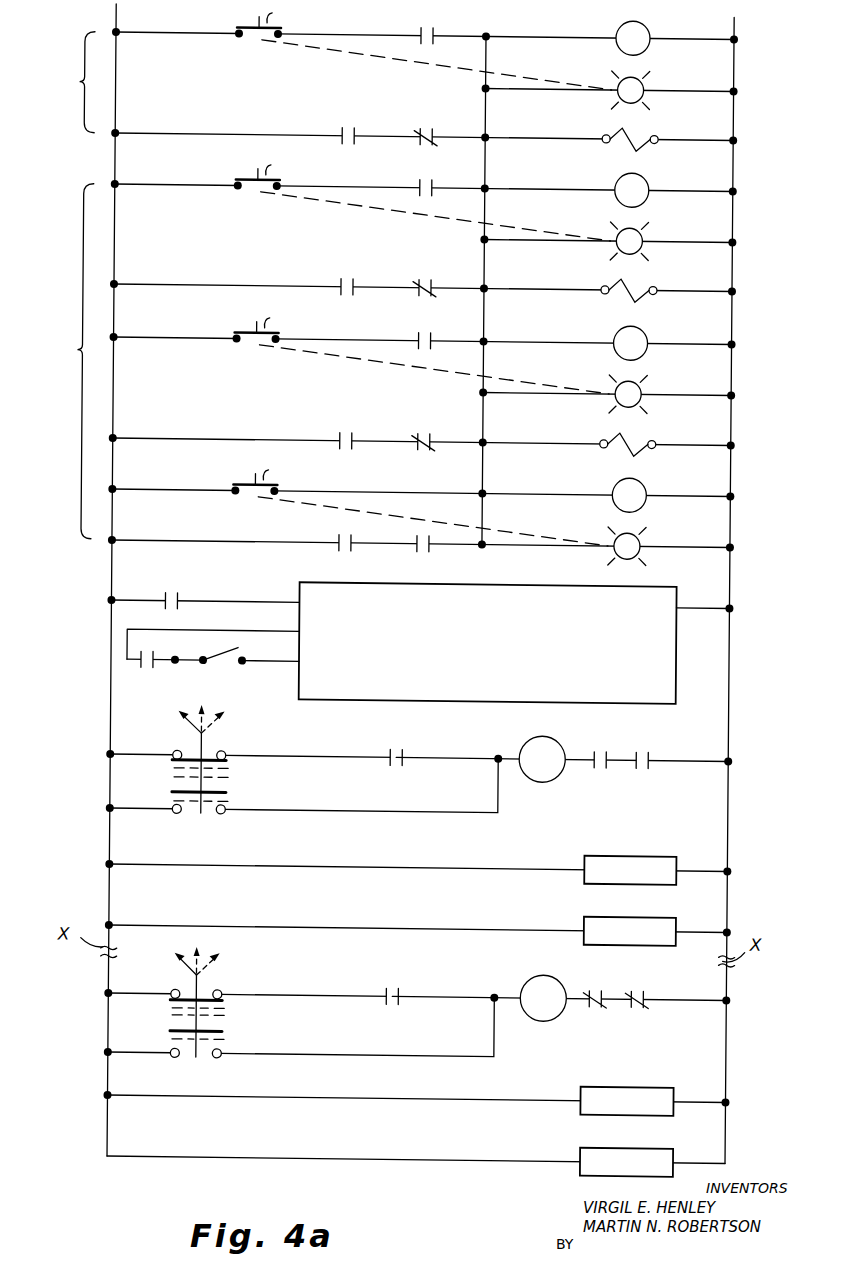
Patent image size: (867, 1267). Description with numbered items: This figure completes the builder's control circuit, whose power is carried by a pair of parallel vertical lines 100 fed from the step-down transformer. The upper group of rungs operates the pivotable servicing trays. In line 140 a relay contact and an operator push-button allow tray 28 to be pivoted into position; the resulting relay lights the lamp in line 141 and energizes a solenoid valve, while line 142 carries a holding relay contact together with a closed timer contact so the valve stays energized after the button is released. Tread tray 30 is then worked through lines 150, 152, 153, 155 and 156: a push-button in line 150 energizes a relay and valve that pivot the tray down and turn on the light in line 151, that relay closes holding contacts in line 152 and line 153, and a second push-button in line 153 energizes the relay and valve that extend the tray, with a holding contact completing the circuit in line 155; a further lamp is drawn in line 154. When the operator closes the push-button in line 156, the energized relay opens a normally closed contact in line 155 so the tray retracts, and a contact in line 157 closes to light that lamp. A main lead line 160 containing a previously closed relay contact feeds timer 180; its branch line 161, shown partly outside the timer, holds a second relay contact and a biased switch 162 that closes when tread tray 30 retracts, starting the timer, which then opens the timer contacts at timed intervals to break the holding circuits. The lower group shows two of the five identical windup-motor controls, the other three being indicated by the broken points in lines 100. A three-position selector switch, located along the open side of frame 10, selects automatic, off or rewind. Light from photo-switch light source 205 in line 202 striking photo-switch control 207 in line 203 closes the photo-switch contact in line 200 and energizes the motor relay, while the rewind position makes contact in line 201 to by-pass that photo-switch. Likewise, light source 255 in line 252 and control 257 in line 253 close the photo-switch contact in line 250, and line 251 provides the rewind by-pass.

The main power lines 100 is at (113, 15).
The tray 28 is at (49, 82).
The tread tray 30 is at (47, 361).
The line 140 is at (185, 32).
The line 141 is at (711, 84).
The line 142 is at (186, 133).
The line 150 is at (181, 184).
The line 151 is at (706, 184).
The line 152 is at (176, 284).
The line 153 is at (176, 337).
The green lamp circuit line 154 is at (716, 388).
The line 155 is at (194, 438).
The line 156 is at (186, 489).
The line 157 is at (716, 540).
The main lead line 160 is at (156, 600).
The branch line 161 is at (243, 629).
The biased switch 162 is at (242, 647).
The timer 180 is at (385, 674).
The line 200 is at (419, 753).
The line 201 is at (172, 807).
The line 202 is at (418, 846).
The line 203 is at (418, 931).
The photo-switch light source 205 is at (673, 850).
The photo-switch control 207 is at (600, 944).
The frame 10 is at (621, 746).
The line 250 is at (122, 993).
The line 251 is at (168, 1051).
The line 252 is at (416, 1080).
The line 253 is at (416, 1146).
The light source 255 is at (655, 1088).
The control 257 is at (591, 1153).